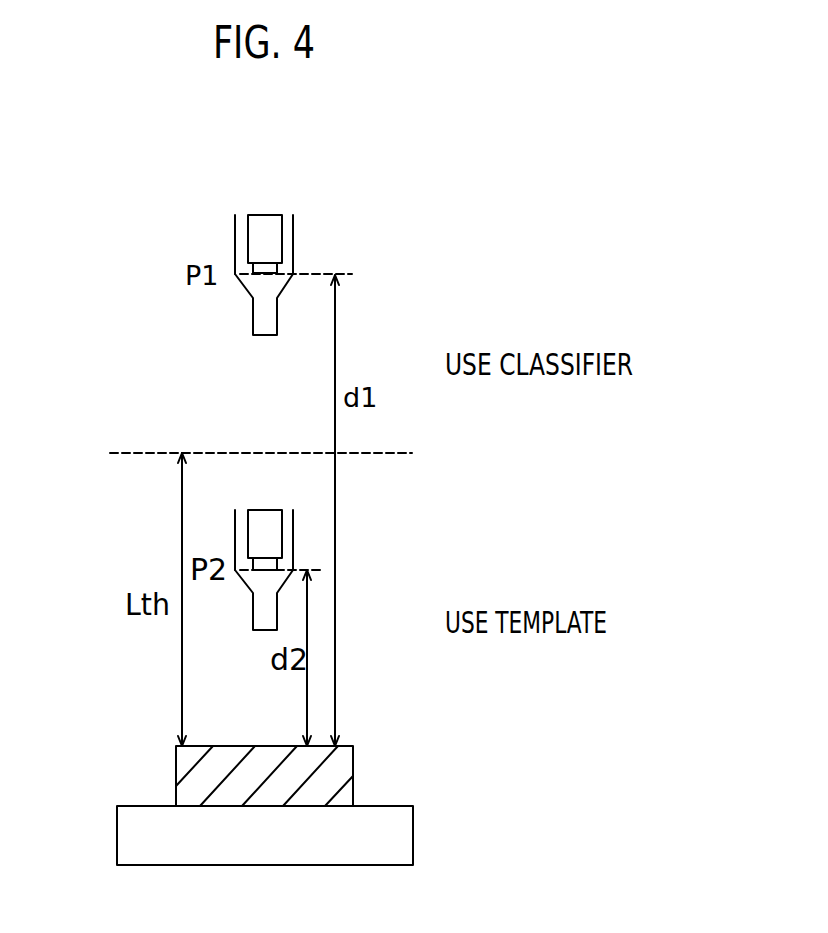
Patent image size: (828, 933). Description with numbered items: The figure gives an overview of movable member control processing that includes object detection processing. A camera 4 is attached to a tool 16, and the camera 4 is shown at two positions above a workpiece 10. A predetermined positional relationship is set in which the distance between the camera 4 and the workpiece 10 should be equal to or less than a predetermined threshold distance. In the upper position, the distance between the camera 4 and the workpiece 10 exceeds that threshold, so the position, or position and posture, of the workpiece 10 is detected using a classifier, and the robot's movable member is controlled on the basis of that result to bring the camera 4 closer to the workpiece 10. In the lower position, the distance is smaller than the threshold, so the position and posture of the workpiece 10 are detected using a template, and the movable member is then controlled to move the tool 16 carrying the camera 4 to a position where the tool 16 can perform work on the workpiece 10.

The camera 4 is at (283, 240).
The tool 16 is at (268, 318).
The workpiece 10 is at (340, 772).